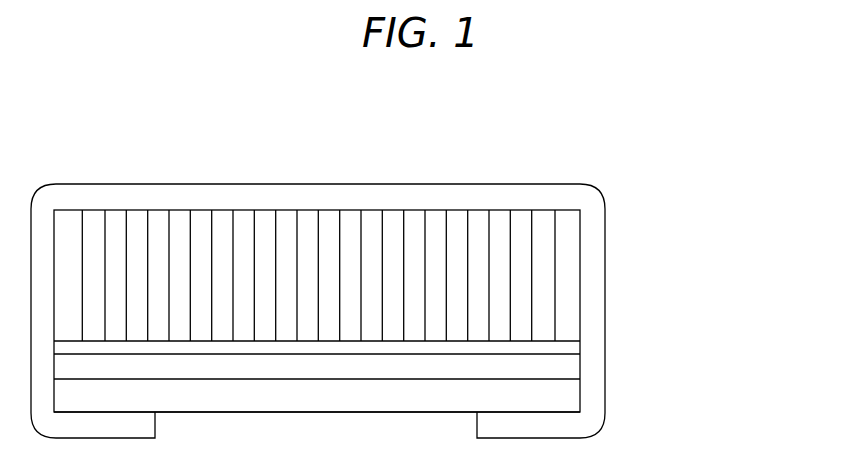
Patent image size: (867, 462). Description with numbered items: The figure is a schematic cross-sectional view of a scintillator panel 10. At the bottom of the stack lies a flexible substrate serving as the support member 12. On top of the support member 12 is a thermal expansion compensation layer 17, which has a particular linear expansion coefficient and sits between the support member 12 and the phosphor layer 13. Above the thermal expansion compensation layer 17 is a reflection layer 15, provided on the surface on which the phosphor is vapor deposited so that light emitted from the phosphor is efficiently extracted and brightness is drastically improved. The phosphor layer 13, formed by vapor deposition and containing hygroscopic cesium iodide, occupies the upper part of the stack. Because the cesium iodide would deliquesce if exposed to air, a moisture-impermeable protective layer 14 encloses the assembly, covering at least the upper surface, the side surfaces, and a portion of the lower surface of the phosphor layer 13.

The scintillator panel 10 is at (718, 185).
The support member 12 is at (565, 389).
The phosphor layer 13 is at (582, 275).
The moisture-impermeable protective layer 14 is at (598, 221).
The reflection layer 15 is at (565, 348).
The thermal expansion compensation layer 17 is at (567, 365).